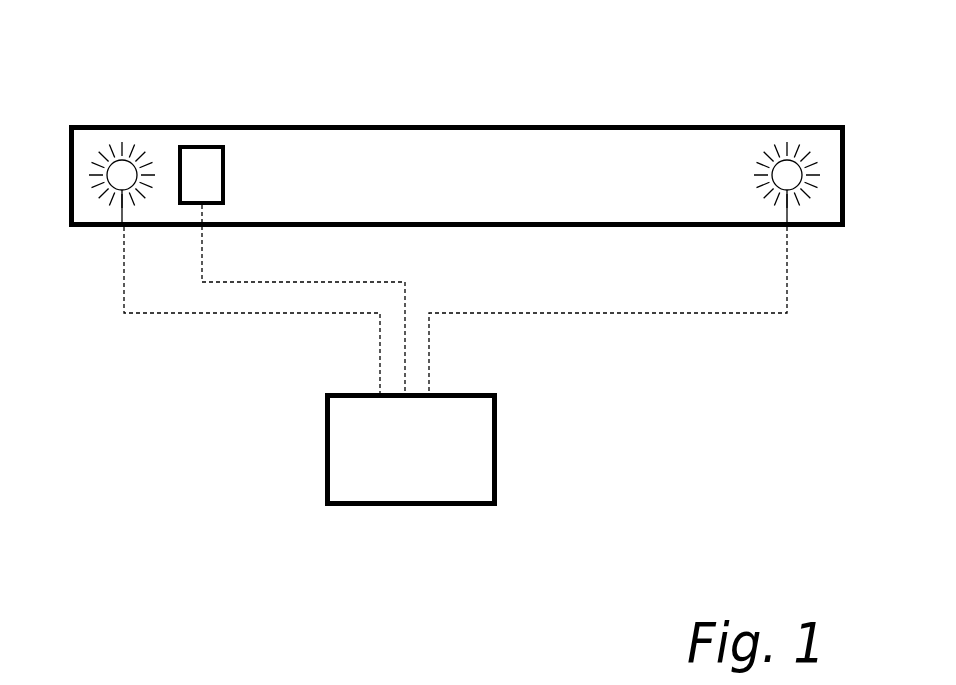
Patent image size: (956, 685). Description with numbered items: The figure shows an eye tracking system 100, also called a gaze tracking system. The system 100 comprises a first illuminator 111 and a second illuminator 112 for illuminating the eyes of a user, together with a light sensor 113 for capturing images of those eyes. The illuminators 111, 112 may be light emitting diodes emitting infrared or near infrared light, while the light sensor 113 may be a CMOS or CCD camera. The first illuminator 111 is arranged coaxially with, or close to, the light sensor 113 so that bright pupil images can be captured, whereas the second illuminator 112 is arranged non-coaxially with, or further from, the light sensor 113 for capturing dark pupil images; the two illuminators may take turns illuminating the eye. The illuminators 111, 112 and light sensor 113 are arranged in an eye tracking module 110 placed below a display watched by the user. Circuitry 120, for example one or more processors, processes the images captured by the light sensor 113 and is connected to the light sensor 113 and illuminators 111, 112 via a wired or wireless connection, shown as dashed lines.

The eye tracking system 100 is at (125, 482).
The eye tracking module 110 is at (392, 123).
The first illuminator 111 is at (122, 160).
The second illuminator 112 is at (786, 172).
The light sensor 113 is at (192, 160).
The circuitry 120 is at (392, 487).